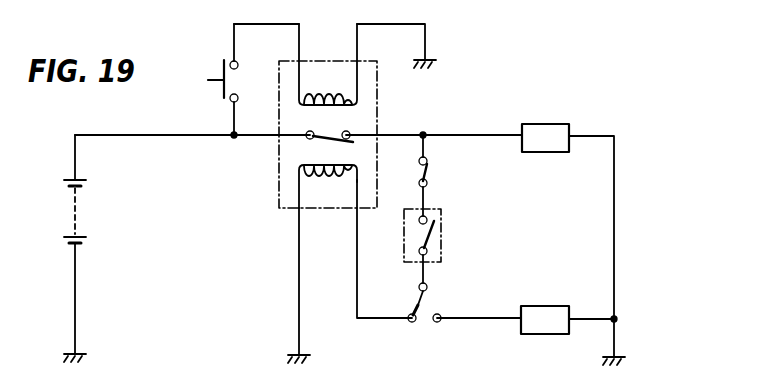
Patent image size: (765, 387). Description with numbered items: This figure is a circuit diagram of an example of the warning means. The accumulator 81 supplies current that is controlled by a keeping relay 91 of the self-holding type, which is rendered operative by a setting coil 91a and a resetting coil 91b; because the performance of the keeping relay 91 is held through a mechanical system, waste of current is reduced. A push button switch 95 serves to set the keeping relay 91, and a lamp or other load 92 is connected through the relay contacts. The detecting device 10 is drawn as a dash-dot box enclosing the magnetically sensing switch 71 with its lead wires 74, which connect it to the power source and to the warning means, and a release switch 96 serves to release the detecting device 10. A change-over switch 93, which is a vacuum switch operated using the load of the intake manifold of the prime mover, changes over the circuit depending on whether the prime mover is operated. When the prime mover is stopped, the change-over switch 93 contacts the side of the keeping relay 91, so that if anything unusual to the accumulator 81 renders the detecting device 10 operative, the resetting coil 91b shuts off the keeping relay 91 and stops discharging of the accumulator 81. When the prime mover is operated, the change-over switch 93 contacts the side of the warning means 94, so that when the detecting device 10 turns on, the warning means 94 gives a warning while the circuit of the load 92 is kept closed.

The detecting device 10 is at (480, 265).
The magnetically sensing switch 71 is at (436, 236).
The lead wires 74 is at (428, 200).
The accumulator 81 is at (90, 183).
The keeping relay 91 is at (279, 149).
The setting coil 91a is at (325, 96).
The resetting coil 91b is at (332, 176).
The lamp or other load 92 is at (546, 124).
The change-over switch 93 is at (426, 307).
The warning means 94 is at (543, 336).
The push button switch 95 is at (221, 70).
The release switch 96 is at (428, 172).